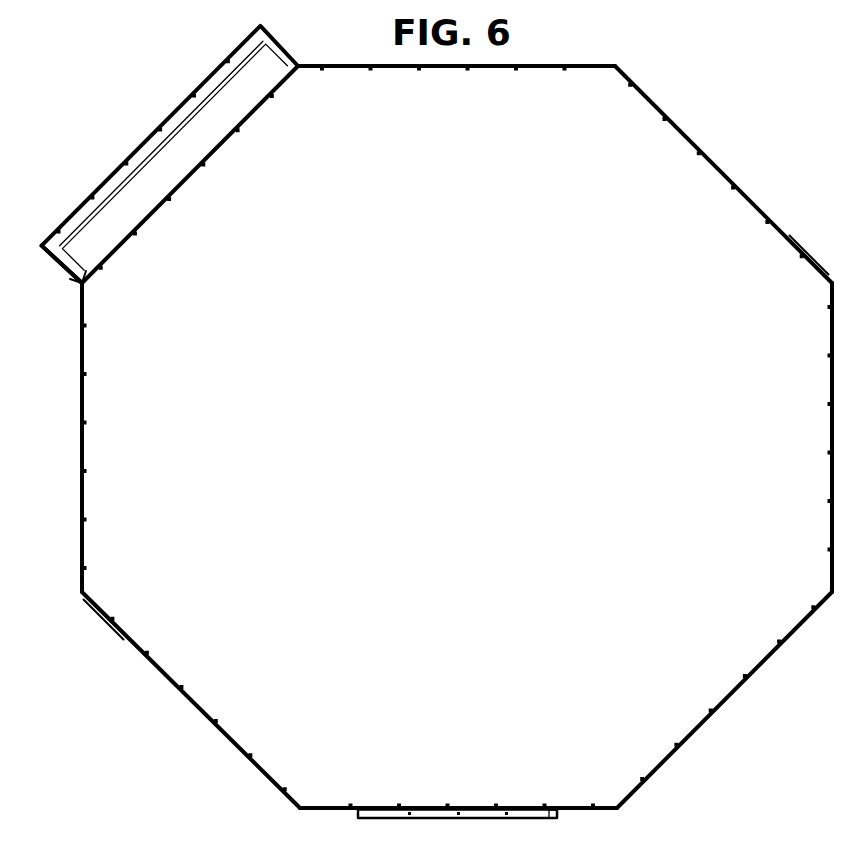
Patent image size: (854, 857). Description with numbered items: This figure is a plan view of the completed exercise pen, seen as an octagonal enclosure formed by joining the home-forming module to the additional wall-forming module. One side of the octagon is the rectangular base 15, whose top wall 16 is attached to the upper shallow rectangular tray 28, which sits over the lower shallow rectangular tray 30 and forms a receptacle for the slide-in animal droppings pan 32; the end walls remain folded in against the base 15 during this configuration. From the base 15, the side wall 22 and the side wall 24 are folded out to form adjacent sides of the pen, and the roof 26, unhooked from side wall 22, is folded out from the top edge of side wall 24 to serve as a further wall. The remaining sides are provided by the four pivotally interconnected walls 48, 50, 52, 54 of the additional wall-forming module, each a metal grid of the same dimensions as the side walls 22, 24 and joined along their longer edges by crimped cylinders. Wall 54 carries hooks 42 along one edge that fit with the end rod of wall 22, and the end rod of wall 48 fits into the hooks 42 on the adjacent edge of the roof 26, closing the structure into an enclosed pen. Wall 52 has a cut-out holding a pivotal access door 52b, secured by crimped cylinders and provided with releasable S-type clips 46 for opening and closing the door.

The rectangular base 15 is at (149, 173).
The top wall 16 is at (213, 151).
The side wall 22 is at (82, 415).
The side wall 24 is at (568, 65).
The roof 26 is at (715, 156).
The upper shallow rectangular tray 28 is at (70, 283).
The lower shallow rectangular tray 30 is at (52, 258).
The animal droppings pan 32 is at (163, 183).
The hooks 42 is at (800, 258).
The S-type hook 46 is at (557, 814).
The wall 48 is at (830, 462).
The wall 50 is at (700, 722).
The wall 52 is at (330, 806).
The pivotal access door 52b is at (464, 818).
The wall 54 is at (188, 692).